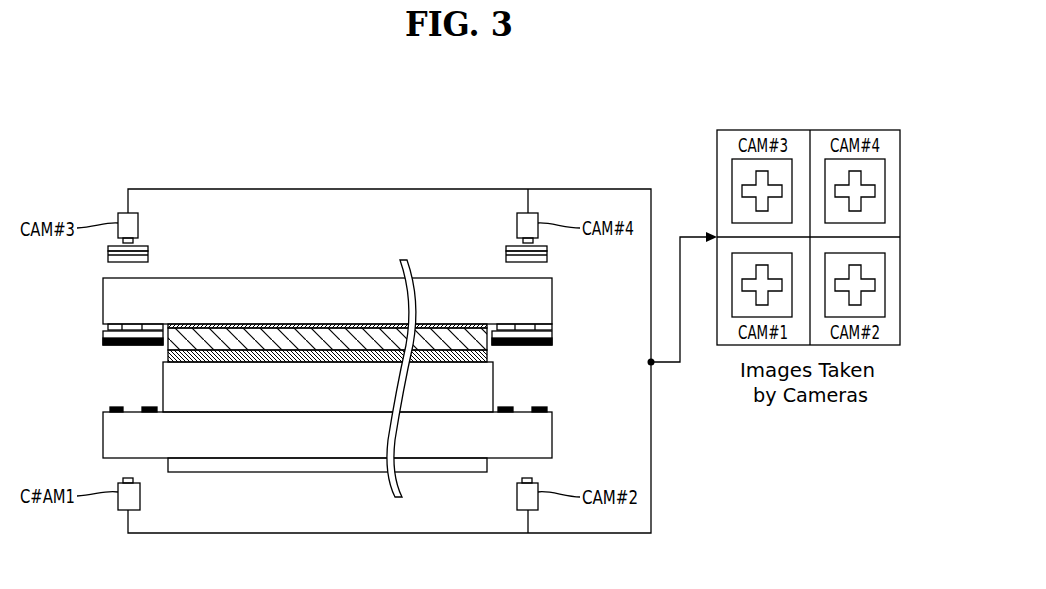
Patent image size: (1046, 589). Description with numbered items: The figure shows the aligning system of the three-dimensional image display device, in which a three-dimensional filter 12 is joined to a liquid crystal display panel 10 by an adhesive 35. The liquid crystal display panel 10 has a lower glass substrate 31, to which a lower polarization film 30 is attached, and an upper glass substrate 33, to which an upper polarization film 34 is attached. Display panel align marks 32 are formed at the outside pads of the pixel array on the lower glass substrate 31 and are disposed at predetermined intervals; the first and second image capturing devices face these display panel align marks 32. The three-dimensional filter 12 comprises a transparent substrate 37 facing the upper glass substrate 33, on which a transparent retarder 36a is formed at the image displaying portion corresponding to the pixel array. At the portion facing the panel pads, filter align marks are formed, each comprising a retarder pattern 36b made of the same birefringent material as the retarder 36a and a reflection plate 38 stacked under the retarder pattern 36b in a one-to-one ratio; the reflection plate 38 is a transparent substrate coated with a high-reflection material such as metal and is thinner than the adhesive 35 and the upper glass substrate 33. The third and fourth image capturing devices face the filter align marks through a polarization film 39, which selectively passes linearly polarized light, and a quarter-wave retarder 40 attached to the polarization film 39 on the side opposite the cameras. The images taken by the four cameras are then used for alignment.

The liquid crystal display panel 10 is at (322, 351).
The 3D filter 12 is at (316, 293).
The lower polarization film 30 is at (170, 465).
The lower glass substrate 31 is at (113, 437).
The display panel align marks 32 is at (108, 409).
The upper glass substrate 33 is at (340, 380).
The upper polarization film 34 is at (298, 357).
The adhesive 35 is at (255, 338).
The retarder 36a is at (205, 324).
The retarder pattern 36b is at (108, 327).
The transparent substrate 37 is at (113, 305).
The reflection plate 38 is at (101, 344).
The polarization film 39 is at (108, 249).
The retarder 40 is at (108, 257).